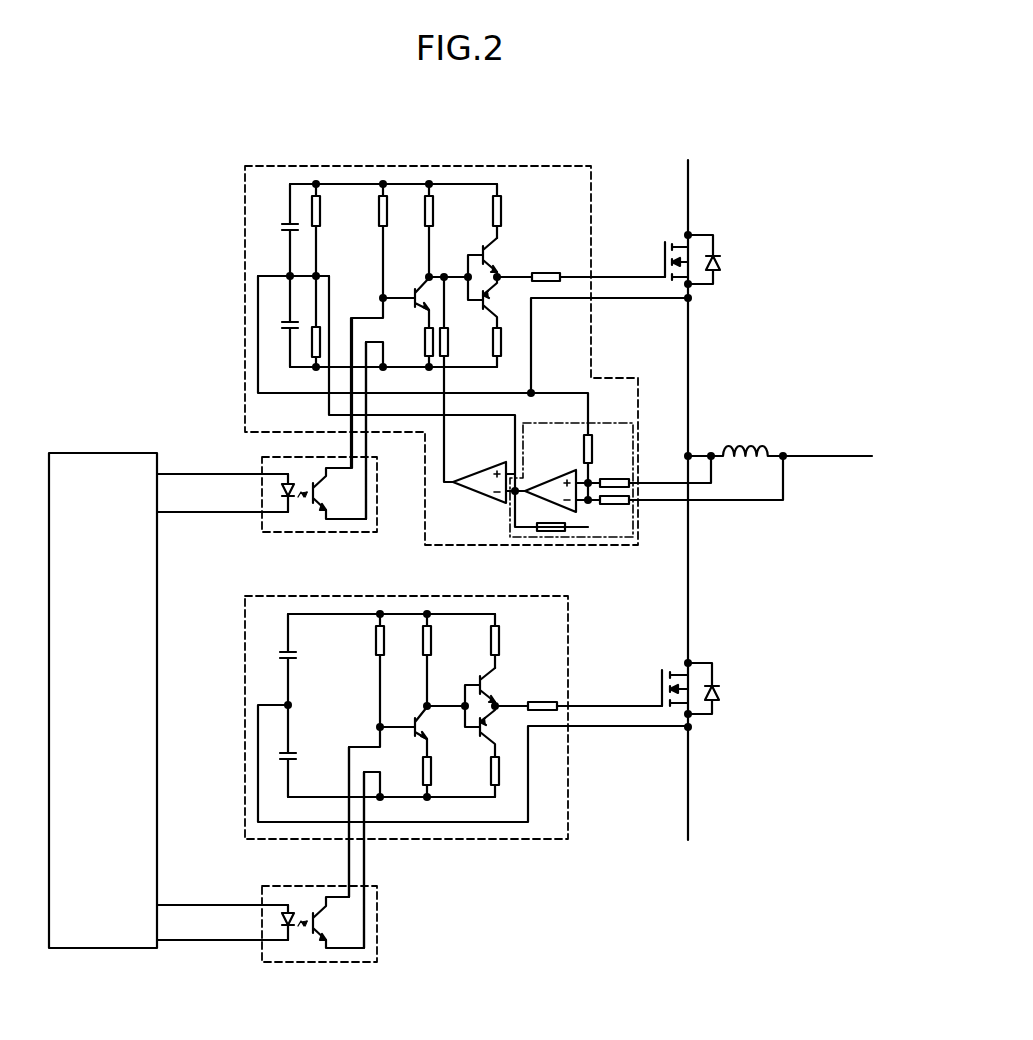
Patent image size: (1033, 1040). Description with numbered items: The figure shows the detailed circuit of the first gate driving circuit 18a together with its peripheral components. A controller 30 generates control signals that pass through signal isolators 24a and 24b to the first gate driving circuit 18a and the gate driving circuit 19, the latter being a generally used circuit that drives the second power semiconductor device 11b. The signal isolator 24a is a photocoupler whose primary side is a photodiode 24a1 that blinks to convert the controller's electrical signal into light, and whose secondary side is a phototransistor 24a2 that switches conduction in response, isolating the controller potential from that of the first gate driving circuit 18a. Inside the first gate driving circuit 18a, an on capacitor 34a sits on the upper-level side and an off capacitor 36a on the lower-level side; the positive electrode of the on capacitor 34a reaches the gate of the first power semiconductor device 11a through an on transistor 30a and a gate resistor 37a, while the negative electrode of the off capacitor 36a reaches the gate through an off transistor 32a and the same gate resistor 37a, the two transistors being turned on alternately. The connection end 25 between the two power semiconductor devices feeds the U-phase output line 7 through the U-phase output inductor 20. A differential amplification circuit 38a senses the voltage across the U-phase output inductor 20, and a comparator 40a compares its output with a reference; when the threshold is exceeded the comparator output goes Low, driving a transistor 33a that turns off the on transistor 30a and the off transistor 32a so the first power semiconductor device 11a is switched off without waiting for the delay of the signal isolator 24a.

The first gate driving circuit 18a is at (372, 166).
The gate driving circuit 19 is at (426, 596).
The on capacitor 34a is at (282, 224).
The off capacitor 36a is at (282, 322).
The transistor 33a is at (414, 290).
The on transistor 30a is at (484, 250).
The off transistor 32a is at (494, 318).
The gate resistor 37a is at (548, 272).
The comparator 40a is at (490, 466).
The differential amplification circuit 38a is at (512, 516).
The first power semiconductor device 11a is at (724, 262).
The second power semiconductor device 11b is at (723, 691).
The connection end 25 is at (684, 456).
The U-phase output inductor 20 is at (755, 433).
The U-phase output line 7 is at (824, 454).
The controller 30 is at (103, 452).
The signal isolator 24a is at (277, 532).
The photodiode 24a1 is at (283, 490).
The phototransistor 24a2 is at (320, 502).
The signal isolator 24b is at (297, 962).